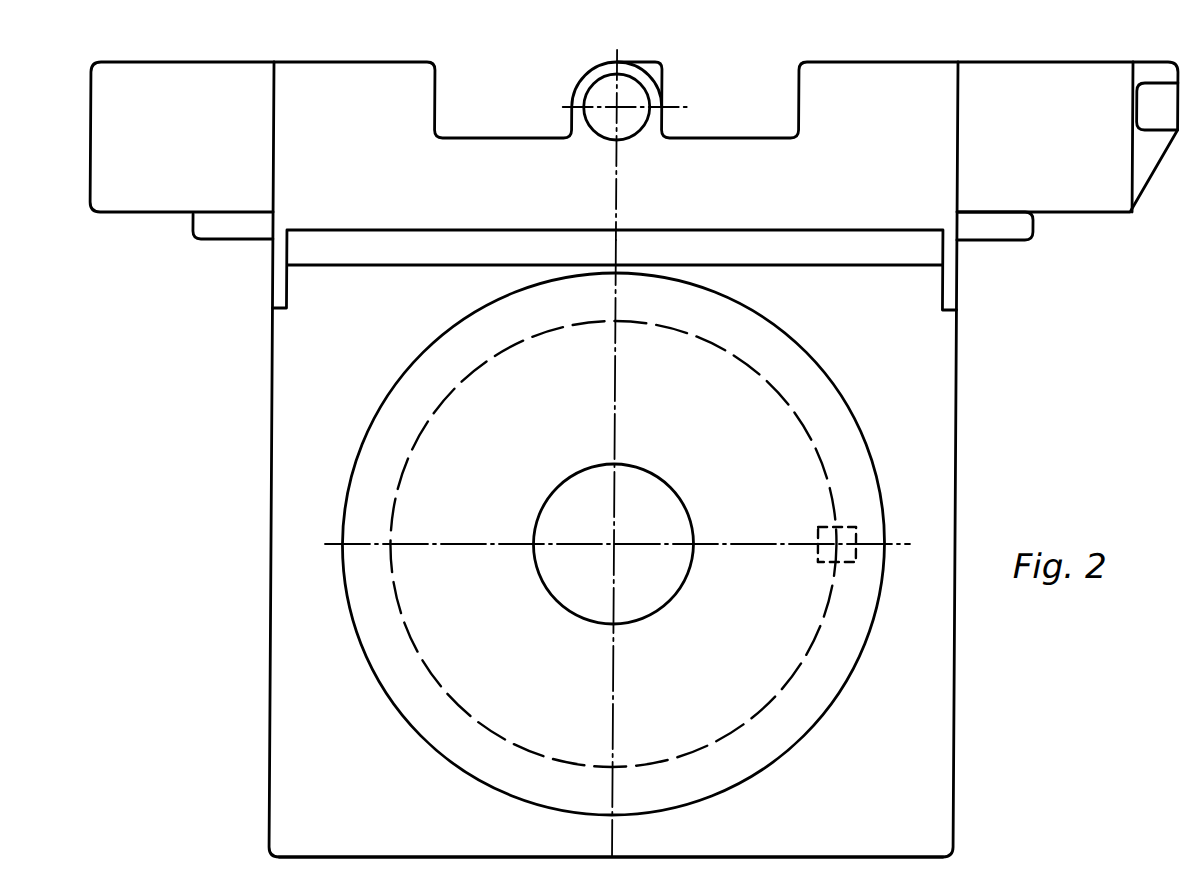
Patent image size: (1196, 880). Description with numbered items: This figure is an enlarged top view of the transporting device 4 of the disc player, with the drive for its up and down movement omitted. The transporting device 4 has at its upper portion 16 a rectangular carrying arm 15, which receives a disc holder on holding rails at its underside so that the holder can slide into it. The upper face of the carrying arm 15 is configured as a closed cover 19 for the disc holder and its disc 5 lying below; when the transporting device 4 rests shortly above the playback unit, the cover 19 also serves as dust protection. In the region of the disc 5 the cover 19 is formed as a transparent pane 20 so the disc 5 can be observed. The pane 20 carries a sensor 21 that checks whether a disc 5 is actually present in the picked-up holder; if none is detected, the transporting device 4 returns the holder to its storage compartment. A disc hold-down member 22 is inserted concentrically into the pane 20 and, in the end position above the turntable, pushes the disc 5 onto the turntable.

The transporting device 4 is at (1004, 269).
The disc 5 is at (719, 350).
The carrying arm 15 is at (956, 422).
The upper portion 16 is at (754, 137).
The cover 19 is at (860, 819).
The transparent pane 20 is at (694, 708).
The sensor 21 is at (852, 538).
The disc hold-down member 22 is at (668, 523).